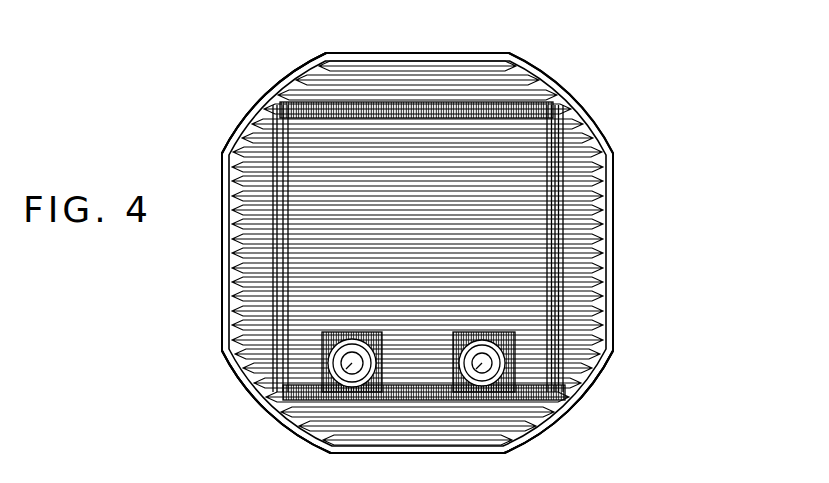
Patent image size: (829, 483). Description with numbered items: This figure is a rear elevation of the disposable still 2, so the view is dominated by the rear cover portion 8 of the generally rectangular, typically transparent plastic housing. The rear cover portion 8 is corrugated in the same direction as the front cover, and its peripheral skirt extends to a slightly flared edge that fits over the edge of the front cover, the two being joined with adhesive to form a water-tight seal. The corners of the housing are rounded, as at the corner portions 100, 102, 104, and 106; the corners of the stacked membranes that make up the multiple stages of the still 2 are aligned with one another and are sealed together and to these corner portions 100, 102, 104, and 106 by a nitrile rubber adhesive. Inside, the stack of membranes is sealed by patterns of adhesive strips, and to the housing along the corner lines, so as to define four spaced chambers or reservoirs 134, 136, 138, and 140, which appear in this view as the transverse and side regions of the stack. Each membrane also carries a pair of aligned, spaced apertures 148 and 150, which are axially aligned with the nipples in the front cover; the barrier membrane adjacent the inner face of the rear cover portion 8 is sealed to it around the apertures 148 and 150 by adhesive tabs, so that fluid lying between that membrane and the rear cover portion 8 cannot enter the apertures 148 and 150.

The disposable still 2 is at (698, 361).
The rear cover portion 8 is at (510, 227).
The rounded corner 100 is at (560, 88).
The rounded corner 102 is at (580, 384).
The rounded corner 104 is at (266, 94).
The rounded corner 106 is at (261, 405).
The chamber 134 is at (577, 263).
The chamber 136 is at (258, 250).
The chamber 138 is at (405, 97).
The chamber 140 is at (486, 418).
The aperture 148 is at (279, 422).
The aperture 150 is at (452, 402).